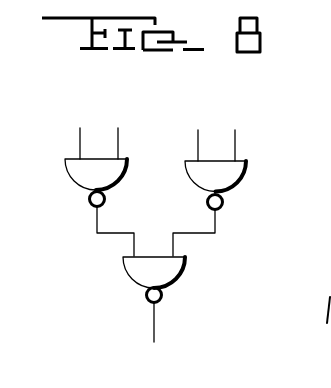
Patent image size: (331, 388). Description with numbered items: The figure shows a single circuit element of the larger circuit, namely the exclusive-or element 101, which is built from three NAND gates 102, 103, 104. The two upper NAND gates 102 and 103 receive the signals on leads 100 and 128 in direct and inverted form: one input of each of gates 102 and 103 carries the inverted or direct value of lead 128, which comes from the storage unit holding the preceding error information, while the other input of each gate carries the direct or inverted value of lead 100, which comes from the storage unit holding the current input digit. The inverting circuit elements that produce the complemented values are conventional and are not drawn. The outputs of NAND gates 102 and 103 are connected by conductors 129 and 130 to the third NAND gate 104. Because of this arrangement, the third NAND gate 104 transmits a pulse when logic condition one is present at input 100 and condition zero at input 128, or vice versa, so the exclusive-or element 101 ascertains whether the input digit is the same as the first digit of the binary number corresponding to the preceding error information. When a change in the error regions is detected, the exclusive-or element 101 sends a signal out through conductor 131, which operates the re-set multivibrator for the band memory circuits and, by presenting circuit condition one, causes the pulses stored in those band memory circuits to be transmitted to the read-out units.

The lead 100 is at (215, 105).
The lead 128 is at (137, 105).
The exclusive-or element 101 is at (127, 302).
The NAND gate 102 is at (85, 172).
The NAND gate 103 is at (225, 175).
The third NAND gate 104 is at (167, 267).
The conductor 129 is at (107, 233).
The conductor 130 is at (217, 220).
The conductor 131 is at (157, 313).